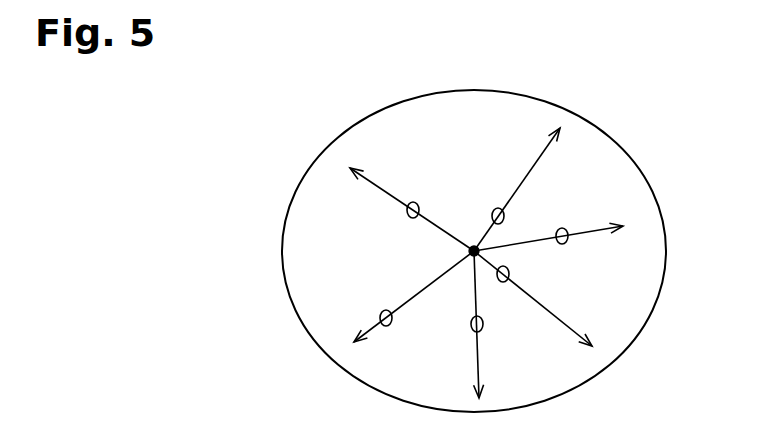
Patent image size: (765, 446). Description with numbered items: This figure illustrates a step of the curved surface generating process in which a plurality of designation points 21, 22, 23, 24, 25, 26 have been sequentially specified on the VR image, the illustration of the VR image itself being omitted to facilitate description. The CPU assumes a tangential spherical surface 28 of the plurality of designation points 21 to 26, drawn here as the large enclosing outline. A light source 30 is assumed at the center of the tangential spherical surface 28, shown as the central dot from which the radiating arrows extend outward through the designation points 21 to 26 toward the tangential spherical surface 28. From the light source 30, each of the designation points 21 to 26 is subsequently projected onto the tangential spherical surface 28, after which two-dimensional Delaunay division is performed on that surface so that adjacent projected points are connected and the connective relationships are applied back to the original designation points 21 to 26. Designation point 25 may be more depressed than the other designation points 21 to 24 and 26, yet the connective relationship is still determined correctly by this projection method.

The designation point 21 is at (379, 314).
The designation point 22 is at (405, 212).
The designation point 23 is at (485, 326).
The designation point 24 is at (490, 208).
The designation point 25 is at (512, 273).
The designation point 26 is at (561, 227).
The tangential spherical surface 28 is at (625, 147).
The light source 30 is at (466, 251).